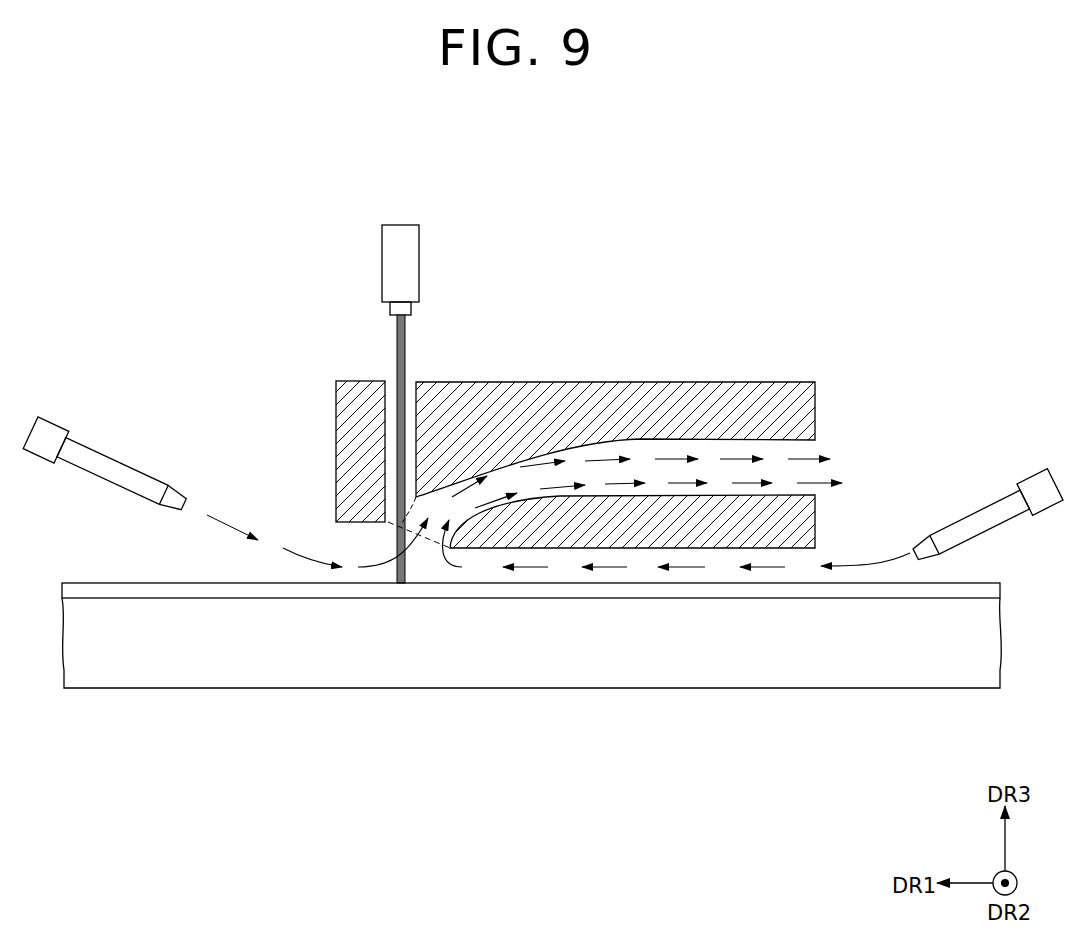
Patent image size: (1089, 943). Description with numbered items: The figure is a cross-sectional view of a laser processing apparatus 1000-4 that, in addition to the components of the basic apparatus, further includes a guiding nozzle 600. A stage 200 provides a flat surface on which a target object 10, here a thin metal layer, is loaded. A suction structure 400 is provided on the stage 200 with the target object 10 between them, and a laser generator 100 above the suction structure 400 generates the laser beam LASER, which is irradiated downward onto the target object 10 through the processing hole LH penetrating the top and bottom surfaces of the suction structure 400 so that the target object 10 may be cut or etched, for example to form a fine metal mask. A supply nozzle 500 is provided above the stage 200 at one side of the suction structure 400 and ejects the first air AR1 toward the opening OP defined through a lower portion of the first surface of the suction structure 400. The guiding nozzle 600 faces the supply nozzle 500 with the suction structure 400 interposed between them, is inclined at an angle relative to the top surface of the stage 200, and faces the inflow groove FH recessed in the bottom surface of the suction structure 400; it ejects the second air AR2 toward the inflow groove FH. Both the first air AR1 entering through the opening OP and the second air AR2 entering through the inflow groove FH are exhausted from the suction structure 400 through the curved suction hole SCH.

The laser processing apparatus 1000-4 is at (772, 216).
The laser generator 100 is at (392, 262).
The laser beam LASER is at (392, 357).
The suction structure 400 is at (695, 390).
The suction hole SCH is at (623, 438).
The processing hole LH is at (410, 393).
The inflow groove FH is at (821, 553).
The first air AR1 is at (301, 565).
The second air AR2 is at (878, 569).
The opening OP is at (340, 538).
The supply nozzle 500 is at (48, 432).
The guiding nozzle 600 is at (1038, 482).
The target object 10 is at (990, 591).
The stage 200 is at (992, 637).